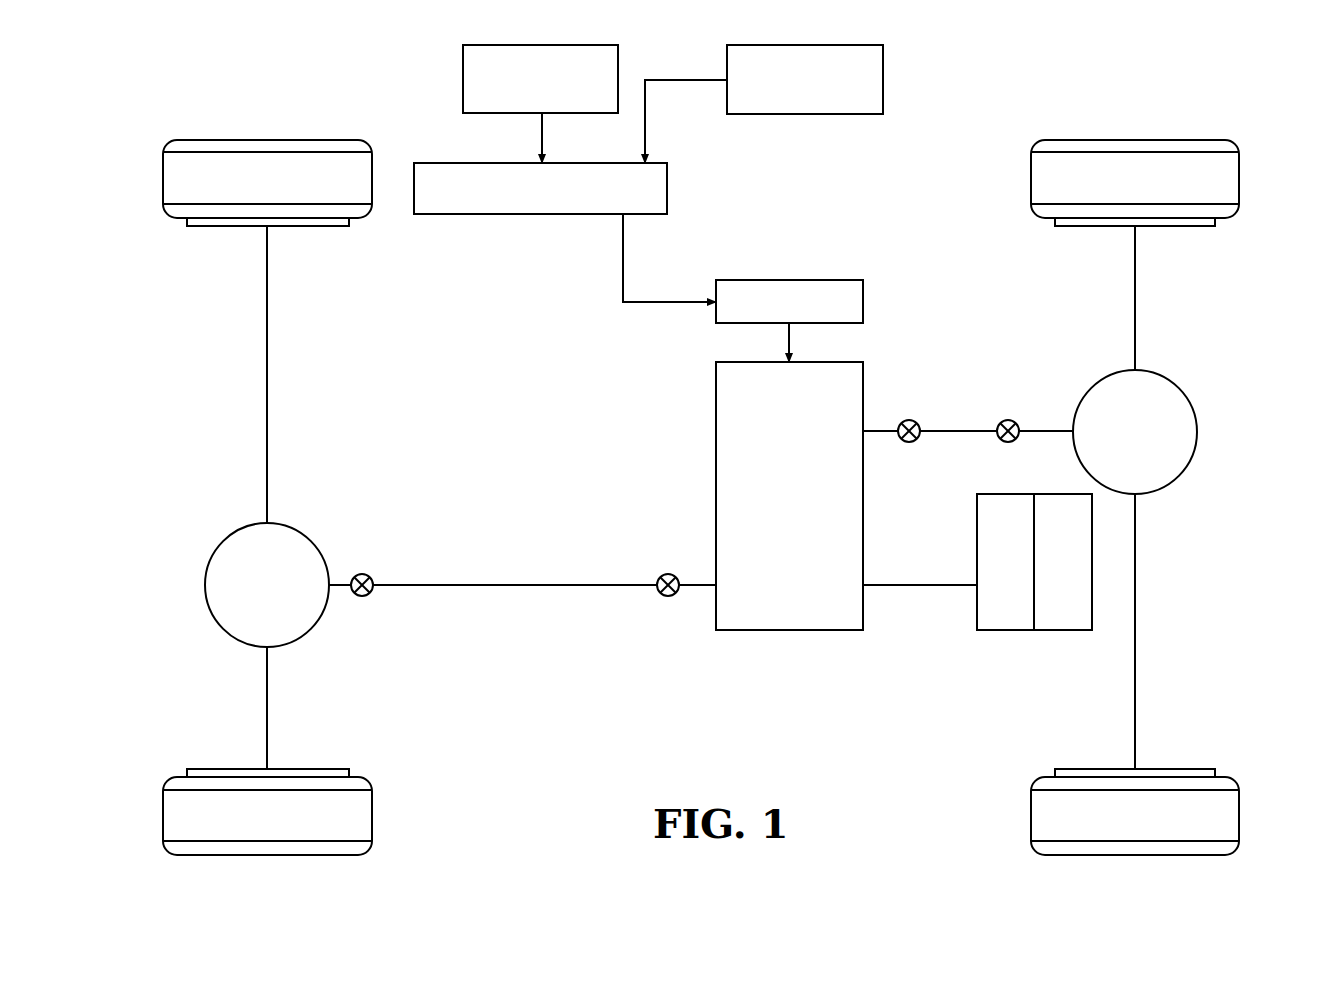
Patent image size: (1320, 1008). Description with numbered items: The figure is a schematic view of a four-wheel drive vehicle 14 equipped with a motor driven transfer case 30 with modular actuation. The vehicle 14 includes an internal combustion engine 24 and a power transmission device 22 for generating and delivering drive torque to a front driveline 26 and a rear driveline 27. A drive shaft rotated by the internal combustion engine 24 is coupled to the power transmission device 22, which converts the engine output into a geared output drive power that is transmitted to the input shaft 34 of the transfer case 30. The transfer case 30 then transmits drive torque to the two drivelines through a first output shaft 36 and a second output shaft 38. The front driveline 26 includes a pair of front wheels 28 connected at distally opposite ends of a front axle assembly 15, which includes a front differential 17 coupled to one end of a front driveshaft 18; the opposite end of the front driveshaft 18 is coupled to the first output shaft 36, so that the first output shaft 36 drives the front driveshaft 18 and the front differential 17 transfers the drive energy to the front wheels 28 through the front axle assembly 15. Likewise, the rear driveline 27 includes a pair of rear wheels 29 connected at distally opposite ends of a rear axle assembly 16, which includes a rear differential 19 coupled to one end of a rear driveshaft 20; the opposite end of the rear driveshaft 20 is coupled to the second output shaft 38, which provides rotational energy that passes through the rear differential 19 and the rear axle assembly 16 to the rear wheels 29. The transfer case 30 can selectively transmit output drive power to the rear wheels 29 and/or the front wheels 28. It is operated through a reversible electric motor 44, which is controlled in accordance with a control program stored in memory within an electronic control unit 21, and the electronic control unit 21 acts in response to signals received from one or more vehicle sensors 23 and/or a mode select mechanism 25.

The vehicle 14 is at (1000, 127).
The front axle assembly 15 is at (232, 358).
The rear axle assembly 16 is at (1155, 295).
The front differential 17 is at (237, 577).
The front driveshaft 18 is at (603, 586).
The rear differential 19 is at (1173, 428).
The rear driveshaft 20 is at (957, 431).
The electronic control unit 21 is at (667, 185).
The power transmission device 22 is at (1003, 631).
The vehicle sensors 23 is at (883, 78).
The internal combustion engine 24 is at (1060, 631).
The mode select mechanism 25 is at (463, 78).
The front driveline 26 is at (470, 620).
The rear driveline 27 is at (1017, 393).
The front wheels 28 is at (185, 178).
The rear wheels 29 is at (1220, 180).
The transfer case 30 is at (865, 530).
The input shaft 34 is at (917, 588).
The first output shaft 36 is at (698, 586).
The second output shaft 38 is at (879, 431).
The reversible electric motor 44 is at (850, 300).